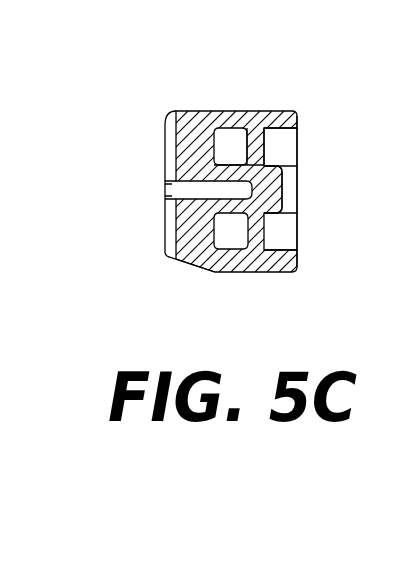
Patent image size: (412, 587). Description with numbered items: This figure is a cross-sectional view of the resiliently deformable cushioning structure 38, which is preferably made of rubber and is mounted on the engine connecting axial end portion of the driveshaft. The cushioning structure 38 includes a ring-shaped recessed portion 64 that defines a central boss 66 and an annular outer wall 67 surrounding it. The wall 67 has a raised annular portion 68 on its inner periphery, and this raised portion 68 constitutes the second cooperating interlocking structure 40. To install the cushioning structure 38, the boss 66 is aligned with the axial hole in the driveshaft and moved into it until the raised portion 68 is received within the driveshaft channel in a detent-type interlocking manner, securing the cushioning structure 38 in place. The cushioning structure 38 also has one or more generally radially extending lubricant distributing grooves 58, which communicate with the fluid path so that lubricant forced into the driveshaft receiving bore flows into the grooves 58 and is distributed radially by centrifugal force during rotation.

The resiliently deformable cushioning structure 38 is at (205, 117).
The second cooperating interlocking structure 40 is at (305, 142).
The lubricant distributing groove 58 is at (165, 190).
The ring-shaped recessed portion 64 is at (237, 239).
The boss 66 is at (273, 195).
The annular outer wall 67 is at (258, 115).
The raised annular portion 68 is at (255, 143).